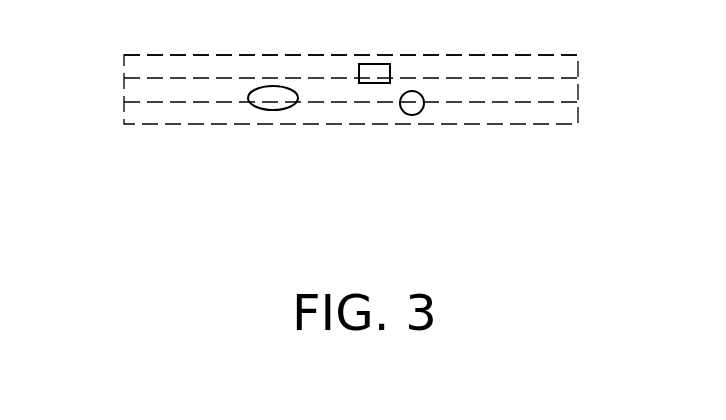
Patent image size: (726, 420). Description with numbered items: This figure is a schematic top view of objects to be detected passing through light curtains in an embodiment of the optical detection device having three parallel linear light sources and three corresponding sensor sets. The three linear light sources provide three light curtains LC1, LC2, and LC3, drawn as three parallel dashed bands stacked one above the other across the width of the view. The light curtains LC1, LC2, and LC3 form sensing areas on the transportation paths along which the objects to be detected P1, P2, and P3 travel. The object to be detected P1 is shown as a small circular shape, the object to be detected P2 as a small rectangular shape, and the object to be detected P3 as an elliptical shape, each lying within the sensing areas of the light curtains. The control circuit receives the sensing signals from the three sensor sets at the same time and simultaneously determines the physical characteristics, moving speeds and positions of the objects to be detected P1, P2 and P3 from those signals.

The light curtain LC1 is at (578, 60).
The light curtain LC2 is at (578, 95).
The light curtain LC3 is at (578, 119).
The object to be detected P1 is at (413, 115).
The object to be detected P2 is at (374, 83).
The object to be detected P3 is at (248, 97).